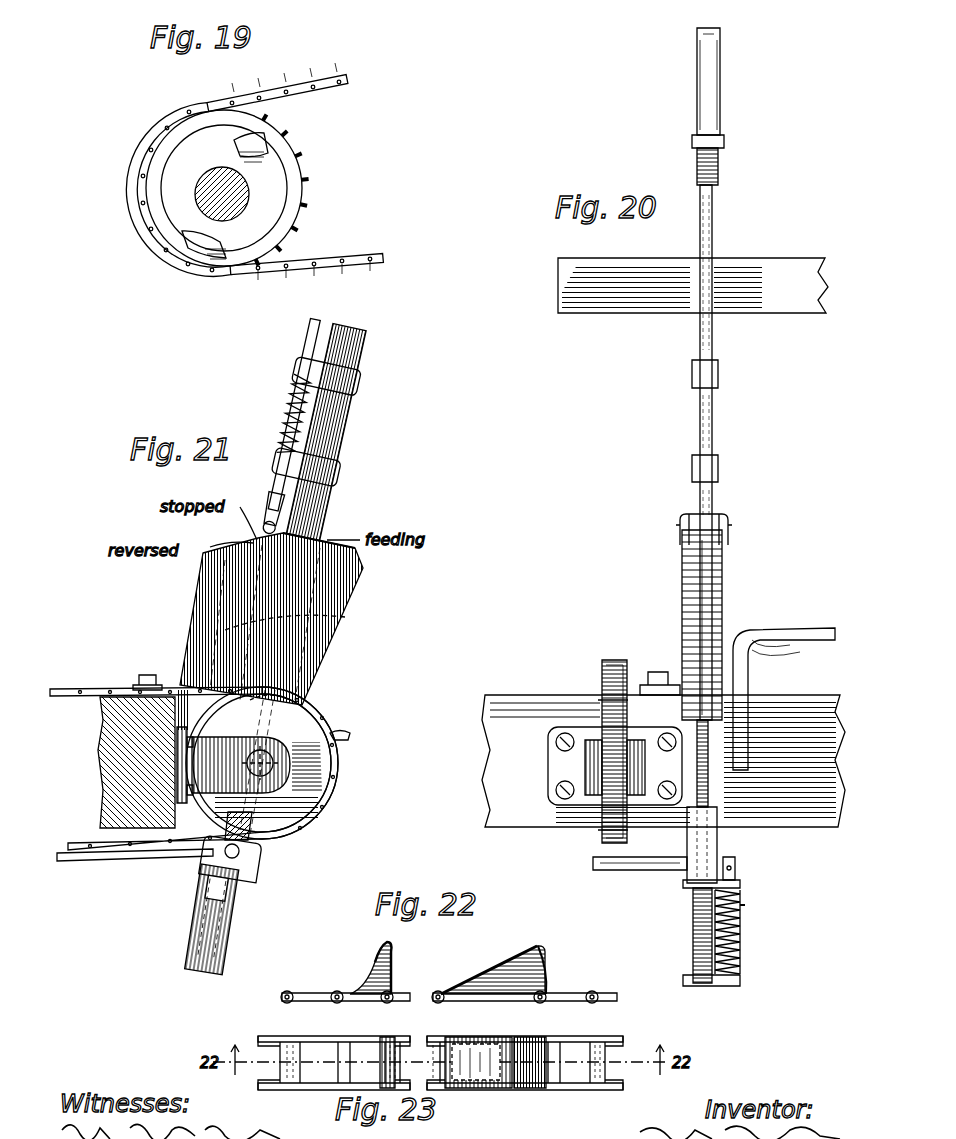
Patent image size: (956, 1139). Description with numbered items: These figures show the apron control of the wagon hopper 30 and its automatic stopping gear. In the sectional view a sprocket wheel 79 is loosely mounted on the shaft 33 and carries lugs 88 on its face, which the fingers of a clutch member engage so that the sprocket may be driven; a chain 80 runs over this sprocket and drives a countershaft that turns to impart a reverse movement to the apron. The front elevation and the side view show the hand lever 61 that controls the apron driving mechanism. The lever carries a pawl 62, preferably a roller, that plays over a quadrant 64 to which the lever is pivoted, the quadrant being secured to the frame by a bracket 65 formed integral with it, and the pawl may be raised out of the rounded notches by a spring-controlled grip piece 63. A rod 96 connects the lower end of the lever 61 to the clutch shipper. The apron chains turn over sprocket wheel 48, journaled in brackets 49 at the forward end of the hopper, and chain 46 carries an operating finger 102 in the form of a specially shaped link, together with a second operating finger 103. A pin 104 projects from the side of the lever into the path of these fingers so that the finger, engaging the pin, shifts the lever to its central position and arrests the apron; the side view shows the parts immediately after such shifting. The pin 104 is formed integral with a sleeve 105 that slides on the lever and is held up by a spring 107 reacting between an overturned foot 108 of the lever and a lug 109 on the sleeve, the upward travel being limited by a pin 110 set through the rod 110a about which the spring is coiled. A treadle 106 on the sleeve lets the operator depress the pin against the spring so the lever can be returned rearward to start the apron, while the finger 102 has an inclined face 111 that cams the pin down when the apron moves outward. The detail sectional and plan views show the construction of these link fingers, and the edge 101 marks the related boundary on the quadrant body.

In FIG. 19, the sprocket wheel 79 is at (268, 182).
In FIG. 19, the shaft 33 is at (240, 205).
In FIG. 19, the lugs 88 is at (193, 250).
In FIG. 19, the chain 80 is at (347, 80).
In FIG. 20, the hopper 30 is at (532, 690).
In FIG. 21, the hopper 30 is at (115, 735).
In FIG. 20, the spring-controlled grip piece 63 is at (722, 118).
In FIG. 21, the spring-controlled grip piece 63 is at (297, 390).
In FIG. 20, the hand lever 61 is at (710, 800).
In FIG. 21, the hand lever 61 is at (333, 427).
In FIG. 20, the pawl 62 is at (728, 525).
In FIG. 21, the pawl 62 is at (262, 528).
In FIG. 20, the quadrant 64 is at (718, 590).
In FIG. 21, the quadrant 64 is at (333, 597).
In FIG. 20, the treadle 106 is at (770, 630).
In FIG. 21, the treadle 106 is at (333, 620).
In FIG. 20, the operating finger 102 is at (614, 668).
In FIG. 21, the operating finger 102 is at (243, 875).
In FIG. 22, the operating finger 102 is at (545, 1045).
In FIG. 23, the operating finger 102 is at (530, 1062).
In FIG. 20, the bracket 65 is at (657, 680).
In FIG. 21, the bracket 65 is at (147, 682).
In FIG. 20, the brackets 49 is at (590, 765).
In FIG. 21, the brackets 49 is at (273, 787).
In FIG. 20, the endless chain 46 is at (605, 833).
In FIG. 21, the endless chain 46 is at (82, 848).
In FIG. 22, the endless chain 46 is at (625, 1040).
In FIG. 23, the endless chain 46 is at (440, 1063).
In FIG. 21, the sprocket wheel 48 is at (310, 737).
In FIG. 21, the second operating finger 103 is at (345, 735).
In FIG. 22, the second operating finger 103 is at (387, 1037).
In FIG. 23, the second operating finger 103 is at (387, 1062).
In FIG. 20, the sleeve 105 is at (712, 825).
In FIG. 21, the sleeve 105 is at (248, 868).
In FIG. 20, the pin 104 is at (626, 865).
In FIG. 21, the pin 104 is at (240, 853).
In FIG. 20, the pin 110 is at (730, 866).
In FIG. 20, the lug 109 is at (738, 883).
In FIG. 20, the rod 96 is at (693, 890).
In FIG. 21, the rod 96 is at (107, 857).
In FIG. 20, the spring 107 is at (740, 922).
In FIG. 20, the rod 110a is at (742, 906).
In FIG. 20, the overturned foot 108 is at (740, 978).
In FIG. 21, the edge 101 is at (317, 543).
In FIG. 21, the inclined face 111 is at (255, 840).
In FIG. 22, the inclined face 111 is at (482, 973).
In FIG. 23, the inclined face 111 is at (497, 1052).